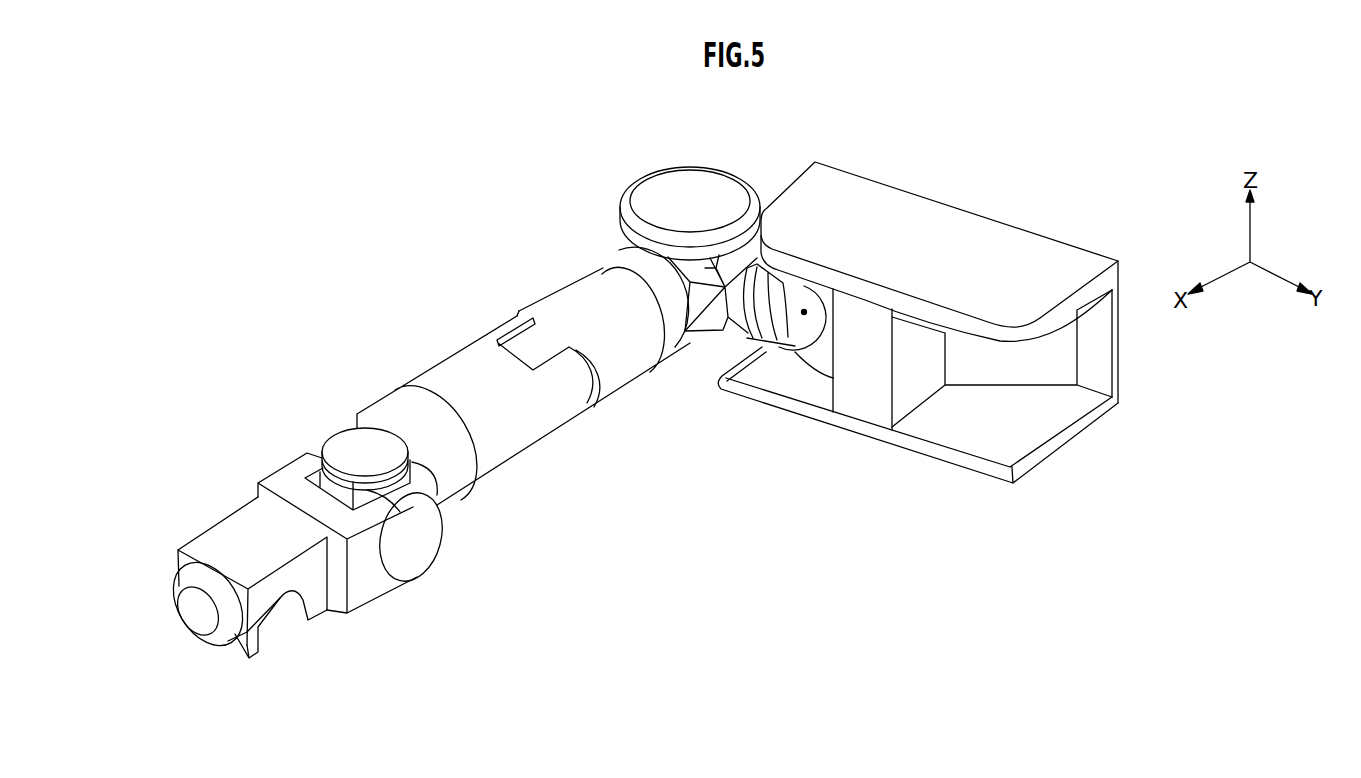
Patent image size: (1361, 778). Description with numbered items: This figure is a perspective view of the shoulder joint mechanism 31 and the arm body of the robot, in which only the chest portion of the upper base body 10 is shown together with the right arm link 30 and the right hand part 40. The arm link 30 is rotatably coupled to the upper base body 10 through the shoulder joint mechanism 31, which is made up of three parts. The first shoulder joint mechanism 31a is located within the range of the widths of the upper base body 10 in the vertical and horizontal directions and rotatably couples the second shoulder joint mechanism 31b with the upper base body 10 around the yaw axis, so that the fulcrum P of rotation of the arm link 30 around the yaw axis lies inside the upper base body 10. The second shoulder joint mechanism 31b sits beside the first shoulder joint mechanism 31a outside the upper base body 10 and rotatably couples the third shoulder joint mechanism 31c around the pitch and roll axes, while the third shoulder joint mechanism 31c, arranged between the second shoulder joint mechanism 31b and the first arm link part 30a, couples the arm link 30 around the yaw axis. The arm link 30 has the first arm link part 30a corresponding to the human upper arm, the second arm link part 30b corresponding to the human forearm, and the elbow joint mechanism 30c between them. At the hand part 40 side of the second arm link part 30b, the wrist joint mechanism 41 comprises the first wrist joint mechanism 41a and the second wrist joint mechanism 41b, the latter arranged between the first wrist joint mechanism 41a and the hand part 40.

The upper base body 10 is at (937, 214).
The fulcrum P is at (804, 312).
The arm link 30 is at (523, 390).
The first arm link part 30a is at (668, 352).
The second arm link part 30b is at (493, 447).
The elbow joint mechanism 30c is at (628, 358).
The shoulder joint mechanism 31 is at (726, 330).
The first shoulder joint mechanism 31a is at (797, 340).
The second shoulder joint mechanism 31b is at (752, 352).
The third shoulder joint mechanism 31c is at (707, 333).
The hand part 40 is at (200, 550).
The wrist joint mechanism 41 is at (368, 574).
The first wrist joint mechanism 41a is at (470, 473).
The second wrist joint mechanism 41b is at (405, 537).